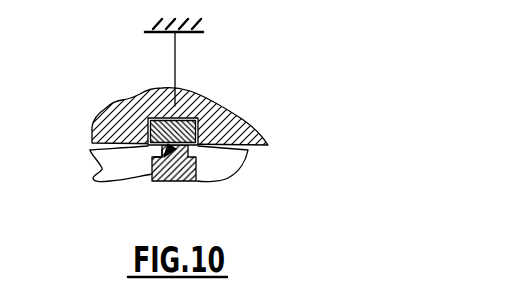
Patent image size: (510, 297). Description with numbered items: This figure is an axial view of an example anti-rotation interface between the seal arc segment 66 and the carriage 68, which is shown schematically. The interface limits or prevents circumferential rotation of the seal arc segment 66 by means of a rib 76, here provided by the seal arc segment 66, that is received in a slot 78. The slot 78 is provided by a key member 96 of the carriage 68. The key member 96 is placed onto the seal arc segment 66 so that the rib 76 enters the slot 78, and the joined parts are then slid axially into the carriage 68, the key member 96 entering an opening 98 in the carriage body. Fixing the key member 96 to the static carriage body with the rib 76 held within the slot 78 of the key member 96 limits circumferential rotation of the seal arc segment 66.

The seal arc segment 66 is at (116, 173).
The carriage 68 is at (243, 125).
The rib 76 is at (170, 175).
The slot 78 is at (154, 162).
The key member 96 is at (191, 117).
The opening 98 is at (169, 148).